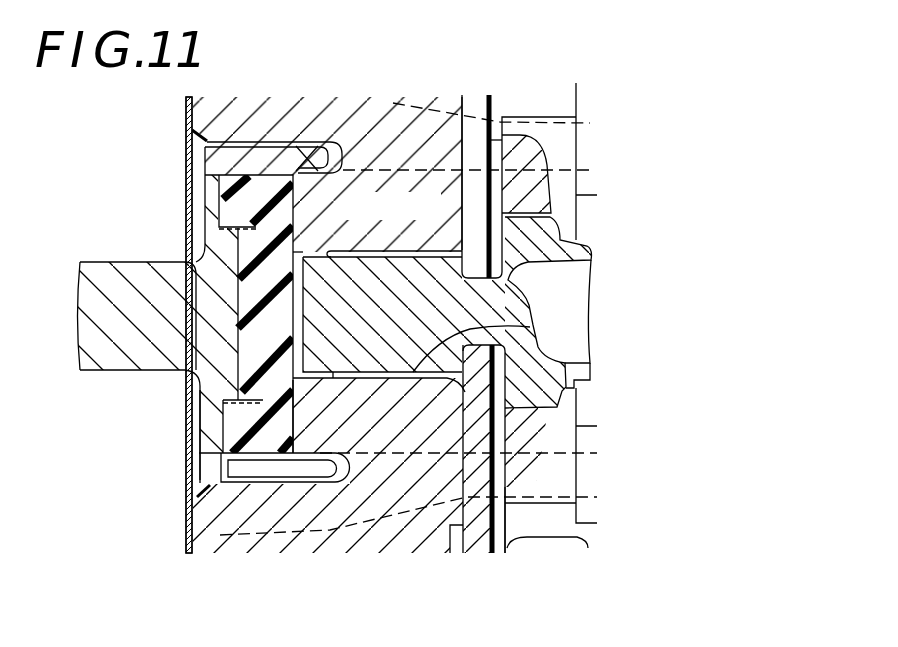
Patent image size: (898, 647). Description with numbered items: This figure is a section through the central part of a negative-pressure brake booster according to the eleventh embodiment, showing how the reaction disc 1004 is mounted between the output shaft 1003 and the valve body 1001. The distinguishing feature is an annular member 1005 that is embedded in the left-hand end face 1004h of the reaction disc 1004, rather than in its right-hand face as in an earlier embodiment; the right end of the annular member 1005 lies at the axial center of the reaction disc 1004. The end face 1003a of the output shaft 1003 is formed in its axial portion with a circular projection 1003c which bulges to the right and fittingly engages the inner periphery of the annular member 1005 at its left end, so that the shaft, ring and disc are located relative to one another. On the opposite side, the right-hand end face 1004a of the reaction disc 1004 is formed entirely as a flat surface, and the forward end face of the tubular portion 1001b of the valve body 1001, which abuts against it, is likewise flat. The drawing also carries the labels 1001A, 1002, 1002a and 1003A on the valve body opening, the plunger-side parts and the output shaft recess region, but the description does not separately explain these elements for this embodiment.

The valve body 1001 is at (402, 532).
The lower seal case 1001A is at (236, 480).
The tubular portion 1001b is at (318, 432).
The hub 1002 is at (521, 288).
The hub surface 1002a is at (200, 258).
The output shaft 1003 is at (75, 318).
The upper seal lip 1003A is at (218, 197).
The end face of output shaft 1003a is at (243, 324).
The circular projection 1003c is at (233, 382).
The reaction disc 1004 is at (259, 178).
The right-hand end face of reaction disc 1004a is at (406, 173).
The left-hand end face of reaction disc 1004h is at (187, 371).
The annular member 1005 is at (318, 141).